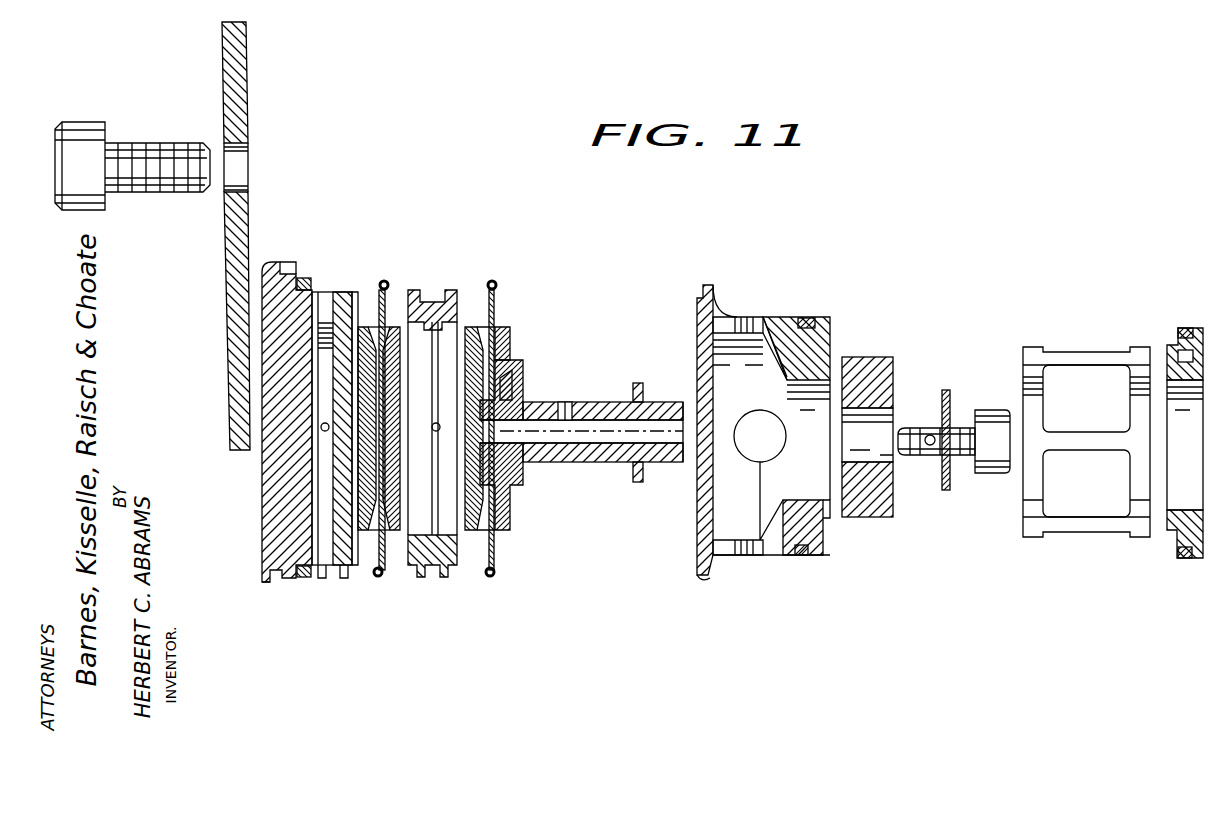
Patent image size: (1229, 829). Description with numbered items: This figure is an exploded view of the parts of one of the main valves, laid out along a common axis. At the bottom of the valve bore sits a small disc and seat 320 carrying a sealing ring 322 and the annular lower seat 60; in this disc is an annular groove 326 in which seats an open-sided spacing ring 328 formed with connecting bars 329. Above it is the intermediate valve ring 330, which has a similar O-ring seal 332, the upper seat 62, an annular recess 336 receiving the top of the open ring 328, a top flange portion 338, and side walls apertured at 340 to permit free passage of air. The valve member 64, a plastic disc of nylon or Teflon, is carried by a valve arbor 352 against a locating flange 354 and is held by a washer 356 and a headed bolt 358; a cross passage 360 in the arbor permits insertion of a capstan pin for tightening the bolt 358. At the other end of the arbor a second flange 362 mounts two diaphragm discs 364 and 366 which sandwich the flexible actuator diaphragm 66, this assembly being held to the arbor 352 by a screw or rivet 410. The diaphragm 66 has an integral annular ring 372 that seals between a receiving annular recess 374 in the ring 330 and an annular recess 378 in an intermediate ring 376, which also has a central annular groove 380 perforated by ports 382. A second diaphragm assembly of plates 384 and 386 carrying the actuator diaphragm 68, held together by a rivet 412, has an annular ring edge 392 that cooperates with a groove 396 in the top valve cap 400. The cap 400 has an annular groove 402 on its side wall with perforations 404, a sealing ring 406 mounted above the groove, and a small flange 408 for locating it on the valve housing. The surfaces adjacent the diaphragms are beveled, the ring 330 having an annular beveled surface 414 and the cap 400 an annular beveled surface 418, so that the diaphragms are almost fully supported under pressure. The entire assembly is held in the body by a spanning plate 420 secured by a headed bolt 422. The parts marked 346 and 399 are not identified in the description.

The lower seat 60 is at (1170, 516).
The upper seat 62 is at (824, 368).
The valve member 64 is at (873, 510).
The actuator diaphragm 66 is at (507, 291).
The actuator diaphragm 68 is at (379, 283).
The disc and seat 320 is at (1197, 330).
The sealing ring 322 is at (1192, 556).
The annular groove 326 is at (1178, 355).
The spacing ring 328 is at (1054, 536).
The connecting bars 329 is at (1107, 442).
The intermediate valve ring 330 is at (782, 575).
The O-ring seal 332 is at (798, 557).
The annular recess 336 is at (818, 528).
The top flange portion 338 is at (705, 313).
The apertures 340 is at (757, 413).
The bearing ring 346 is at (776, 325).
The valve arbor 352 is at (612, 455).
The locating flange 354 is at (638, 474).
The washer 356 is at (946, 392).
The headed bolt 358 is at (996, 460).
The cross passage 360 is at (568, 412).
The second flange 362 is at (511, 464).
The diaphragm disc 364 is at (511, 330).
The diaphragm disc 366 is at (478, 300).
The annular ring 372 is at (496, 575).
The receiving annular recess 374 is at (706, 296).
The intermediate ring 376 is at (466, 584).
The annular recess 378 is at (418, 546).
The central annular groove 380 is at (438, 290).
The ports 382 is at (466, 292).
The diaphragm plate 384 is at (392, 328).
The diaphragm plate 386 is at (368, 540).
The annular ring edge 392 is at (372, 282).
The groove 396 is at (350, 280).
The cup 399 is at (430, 290).
The top valve cap 400 is at (256, 593).
The annular groove 402 is at (328, 278).
The perforations 404 is at (292, 272).
The sealing ring 406 is at (303, 276).
The small flange 408 is at (262, 580).
The screw or rivet 410 is at (495, 378).
The rivet 412 is at (325, 430).
The annular beveled surface 414 is at (697, 557).
The annular beveled surface 418 is at (324, 578).
The spanning plate 420 is at (237, 133).
The headed bolt 422 is at (183, 175).